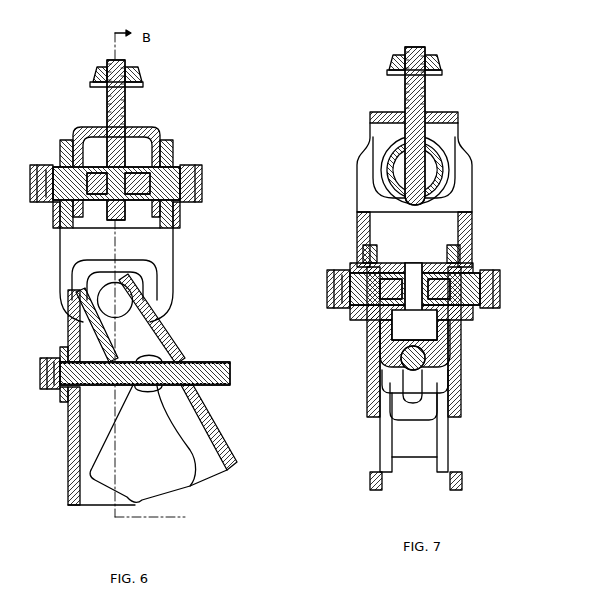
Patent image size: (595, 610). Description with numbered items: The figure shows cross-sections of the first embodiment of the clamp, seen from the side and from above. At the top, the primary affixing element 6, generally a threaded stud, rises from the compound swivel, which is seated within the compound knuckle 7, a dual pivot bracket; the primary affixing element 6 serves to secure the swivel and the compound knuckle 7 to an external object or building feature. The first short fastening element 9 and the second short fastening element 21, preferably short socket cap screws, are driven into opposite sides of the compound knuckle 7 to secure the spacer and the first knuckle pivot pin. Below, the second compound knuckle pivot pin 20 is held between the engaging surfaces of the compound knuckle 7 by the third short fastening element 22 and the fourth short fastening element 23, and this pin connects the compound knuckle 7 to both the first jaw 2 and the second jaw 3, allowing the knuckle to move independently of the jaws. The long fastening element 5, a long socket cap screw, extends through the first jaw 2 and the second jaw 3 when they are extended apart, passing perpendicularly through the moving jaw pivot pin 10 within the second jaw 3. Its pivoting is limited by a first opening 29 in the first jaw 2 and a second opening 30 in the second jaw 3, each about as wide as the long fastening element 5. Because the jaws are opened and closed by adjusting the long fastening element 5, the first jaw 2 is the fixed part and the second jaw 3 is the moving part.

In FIG. 6, the first jaw 2 is at (66, 501).
In FIG. 6, the second jaw 3 is at (228, 458).
In FIG. 6, the long fastening element 5 is at (210, 362).
In FIG. 6, the primary affixing element 6 is at (127, 108).
In FIG. 7, the primary affixing element 6 is at (427, 93).
In FIG. 6, the compound knuckle 7 is at (160, 135).
In FIG. 7, the compound knuckle 7 is at (458, 118).
In FIG. 6, the first short fastening element 9 is at (193, 167).
In FIG. 6, the moving jaw pivot pin 10 is at (167, 337).
In FIG. 6, the second compound knuckle pivot pin 20 is at (157, 292).
In FIG. 6, the second short fastening element 21 is at (33, 168).
In FIG. 7, the third short fastening element 22 is at (495, 270).
In FIG. 7, the fourth short fastening element 23 is at (328, 276).
In FIG. 6, the first opening 29 is at (70, 410).
In FIG. 6, the second opening 30 is at (202, 403).